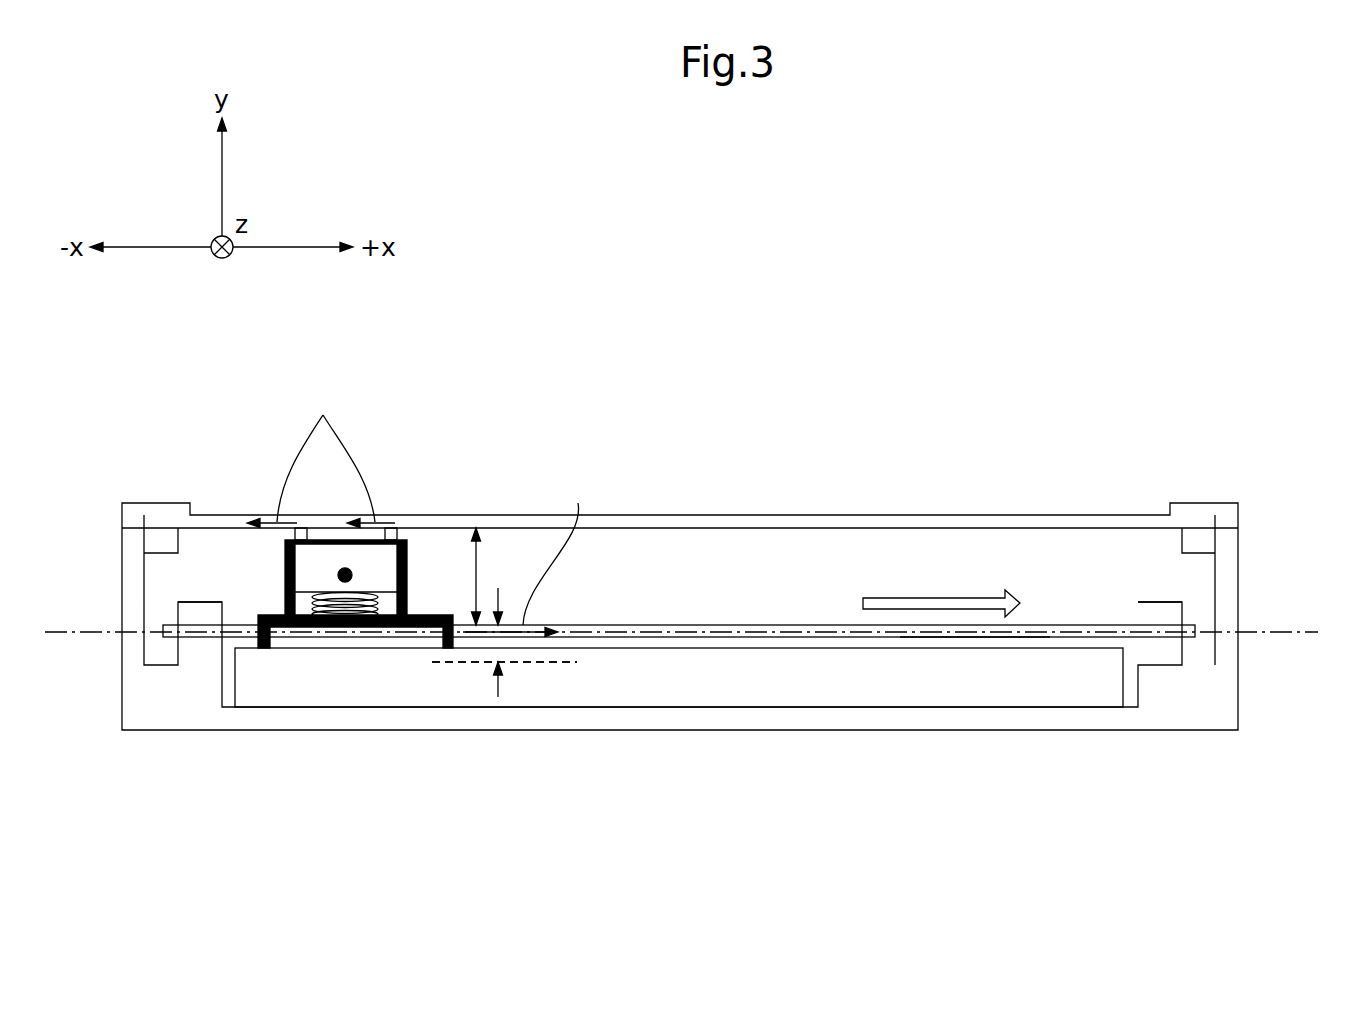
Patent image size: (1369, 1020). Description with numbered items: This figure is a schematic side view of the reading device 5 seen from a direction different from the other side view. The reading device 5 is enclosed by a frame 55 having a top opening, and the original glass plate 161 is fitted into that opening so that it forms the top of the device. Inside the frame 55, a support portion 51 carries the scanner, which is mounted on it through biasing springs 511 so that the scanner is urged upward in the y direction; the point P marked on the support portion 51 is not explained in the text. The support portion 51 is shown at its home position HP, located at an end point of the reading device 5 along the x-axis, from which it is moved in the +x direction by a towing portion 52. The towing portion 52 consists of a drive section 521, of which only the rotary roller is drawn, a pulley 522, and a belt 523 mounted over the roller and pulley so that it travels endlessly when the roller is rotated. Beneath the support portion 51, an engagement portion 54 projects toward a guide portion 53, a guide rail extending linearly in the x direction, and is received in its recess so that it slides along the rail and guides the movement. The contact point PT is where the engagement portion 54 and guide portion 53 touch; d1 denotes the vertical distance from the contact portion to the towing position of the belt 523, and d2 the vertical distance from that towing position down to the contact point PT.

The reading device 5 is at (1253, 498).
The frame 55 is at (1243, 558).
The original glass plate 161 is at (937, 515).
The towing portion 52 is at (1070, 612).
The drive section 521 is at (1160, 660).
The pulley 522 is at (200, 650).
The belt 523 is at (973, 644).
The guide portion 53 is at (300, 662).
The support portion 51 is at (407, 562).
The biasing springs 511 is at (380, 600).
The engagement portion 54 is at (428, 614).
The pressing point P is at (343, 566).
The home position HP is at (385, 510).
The contact point PT is at (457, 662).
The vertical distance d1 is at (478, 578).
The vertical distance d2 is at (508, 645).